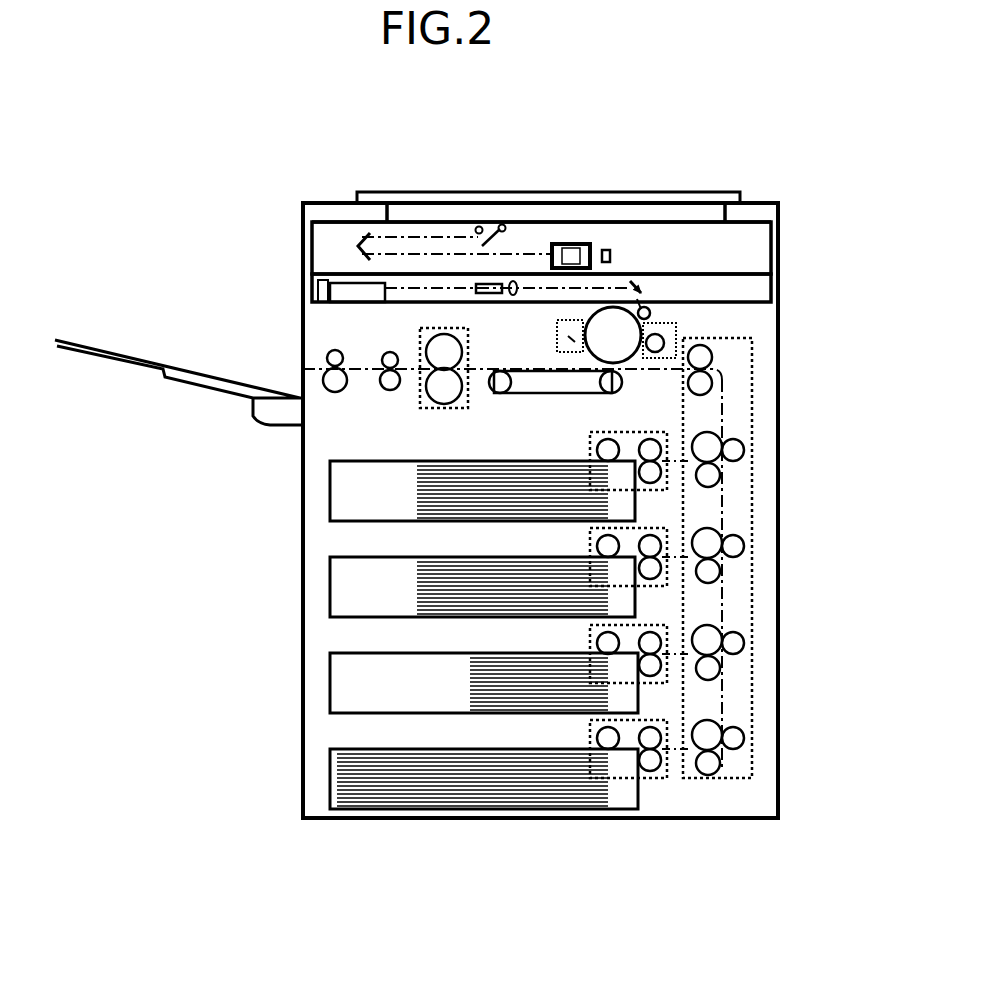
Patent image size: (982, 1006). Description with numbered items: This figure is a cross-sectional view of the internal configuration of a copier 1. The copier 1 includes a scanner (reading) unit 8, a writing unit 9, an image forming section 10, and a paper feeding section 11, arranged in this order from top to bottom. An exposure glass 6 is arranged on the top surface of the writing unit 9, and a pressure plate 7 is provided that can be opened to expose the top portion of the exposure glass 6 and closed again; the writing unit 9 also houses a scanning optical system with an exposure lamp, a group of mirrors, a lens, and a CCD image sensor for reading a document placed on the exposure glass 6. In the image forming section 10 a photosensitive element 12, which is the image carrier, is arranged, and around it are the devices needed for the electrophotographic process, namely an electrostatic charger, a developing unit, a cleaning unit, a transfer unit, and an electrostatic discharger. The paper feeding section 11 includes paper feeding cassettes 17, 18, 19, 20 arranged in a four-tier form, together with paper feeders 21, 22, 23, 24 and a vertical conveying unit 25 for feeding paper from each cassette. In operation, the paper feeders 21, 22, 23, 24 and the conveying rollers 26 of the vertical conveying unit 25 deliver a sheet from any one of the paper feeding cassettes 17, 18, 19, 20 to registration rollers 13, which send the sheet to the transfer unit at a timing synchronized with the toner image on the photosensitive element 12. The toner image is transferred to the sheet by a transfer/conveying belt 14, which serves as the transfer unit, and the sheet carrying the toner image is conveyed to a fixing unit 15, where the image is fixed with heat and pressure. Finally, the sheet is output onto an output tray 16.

The copier 1 is at (342, 152).
The exposure glass 6 is at (628, 202).
The pressure plate 7 is at (505, 193).
The scanner unit 8 is at (771, 240).
The writing unit 9 is at (771, 285).
The image forming section 10 is at (340, 427).
The paper feeding section 11 is at (322, 632).
The photosensitive element 12 is at (616, 331).
The registration rollers 13 is at (759, 543).
The transfer/conveying belt 14 is at (560, 393).
The fixing unit 15 is at (462, 408).
The output tray 16 is at (128, 352).
The paper feeding cassette 17 is at (402, 521).
The paper feeding cassette 18 is at (393, 603).
The paper feeding cassette 19 is at (393, 700).
The paper feeding cassette 20 is at (390, 805).
The paper feeder 21 is at (588, 447).
The paper feeder 22 is at (588, 543).
The paper feeder 23 is at (588, 640).
The paper feeder 24 is at (588, 735).
The vertical conveying unit 25 is at (757, 594).
The conveying rollers 26 is at (741, 474).